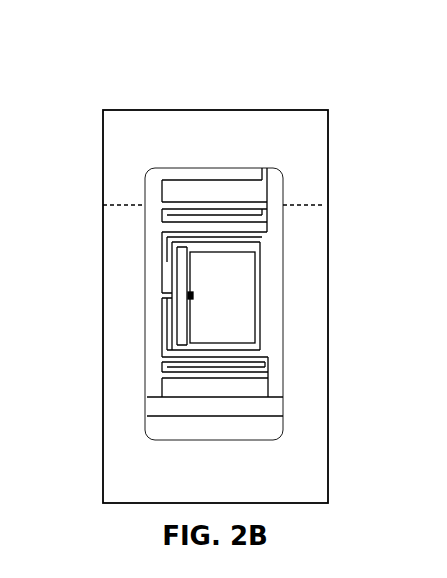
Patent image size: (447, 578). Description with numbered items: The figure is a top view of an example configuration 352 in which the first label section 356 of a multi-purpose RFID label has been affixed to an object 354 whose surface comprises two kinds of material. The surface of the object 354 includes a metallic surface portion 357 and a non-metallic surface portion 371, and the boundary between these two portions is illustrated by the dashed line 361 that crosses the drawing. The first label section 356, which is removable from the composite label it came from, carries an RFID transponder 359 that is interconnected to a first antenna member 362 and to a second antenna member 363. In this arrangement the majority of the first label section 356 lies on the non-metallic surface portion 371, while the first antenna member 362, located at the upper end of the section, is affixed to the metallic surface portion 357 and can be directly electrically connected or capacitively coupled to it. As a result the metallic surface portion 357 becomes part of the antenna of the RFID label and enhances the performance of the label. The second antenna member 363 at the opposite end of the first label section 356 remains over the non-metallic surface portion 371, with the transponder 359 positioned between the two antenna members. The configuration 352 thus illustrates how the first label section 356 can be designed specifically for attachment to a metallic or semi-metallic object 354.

The example configuration 352 is at (323, 60).
The object 354 is at (83, 505).
The first label section 356 is at (270, 233).
The metallic surface portion 357 is at (215, 306).
The RFID transponder 359 is at (216, 297).
The dashed line 361 is at (332, 210).
The first antenna member 362 is at (225, 179).
The second antenna member 363 is at (278, 412).
The non-metallic surface portion 371 is at (229, 323).